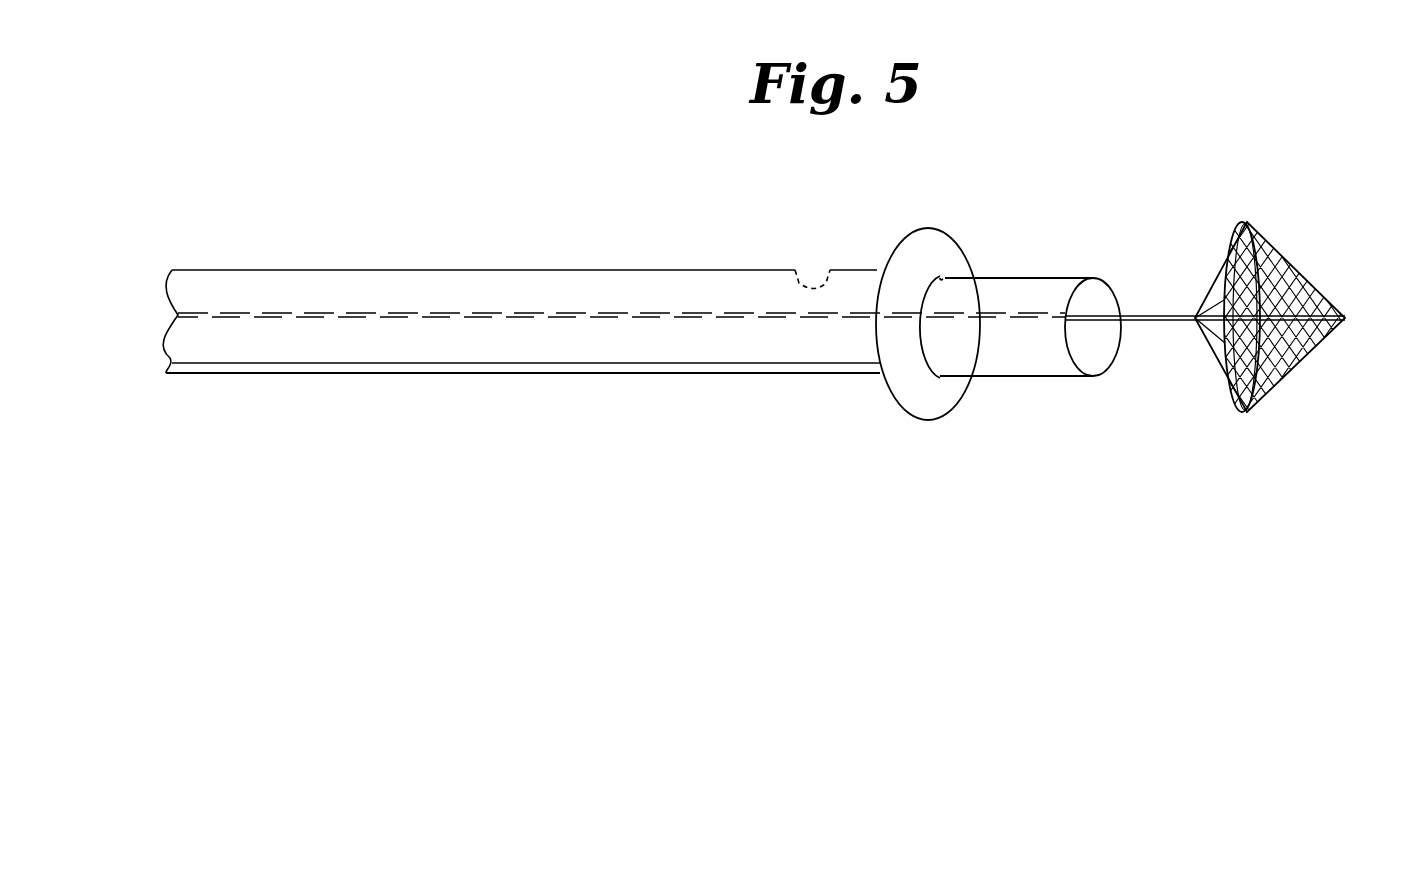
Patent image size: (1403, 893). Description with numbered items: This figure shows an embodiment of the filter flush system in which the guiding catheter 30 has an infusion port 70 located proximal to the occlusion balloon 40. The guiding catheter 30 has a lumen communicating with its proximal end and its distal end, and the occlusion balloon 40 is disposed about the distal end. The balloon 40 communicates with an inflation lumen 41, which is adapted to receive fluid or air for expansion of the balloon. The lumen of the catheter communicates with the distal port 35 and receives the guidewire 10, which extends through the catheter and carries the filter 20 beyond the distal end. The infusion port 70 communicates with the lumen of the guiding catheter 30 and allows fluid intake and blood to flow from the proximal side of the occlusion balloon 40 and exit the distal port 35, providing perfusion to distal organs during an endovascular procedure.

The guidewire 10 is at (374, 312).
The filter 20 is at (1302, 257).
The guiding catheter 30 is at (518, 268).
The distal port 35 is at (1104, 300).
The occlusion balloon 40 is at (944, 252).
The inflation lumen 41 is at (752, 375).
The infusion port 70 is at (809, 270).